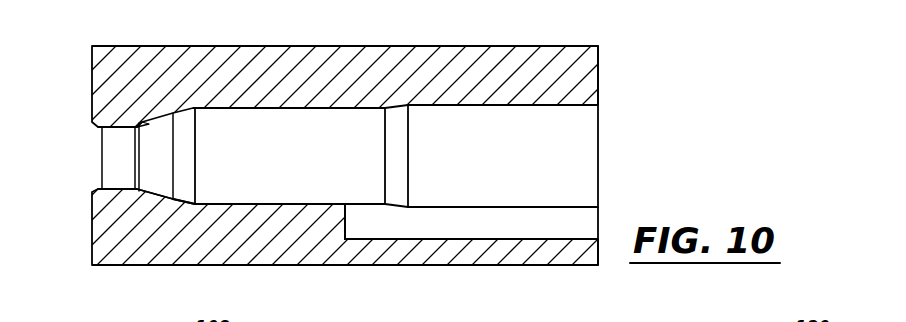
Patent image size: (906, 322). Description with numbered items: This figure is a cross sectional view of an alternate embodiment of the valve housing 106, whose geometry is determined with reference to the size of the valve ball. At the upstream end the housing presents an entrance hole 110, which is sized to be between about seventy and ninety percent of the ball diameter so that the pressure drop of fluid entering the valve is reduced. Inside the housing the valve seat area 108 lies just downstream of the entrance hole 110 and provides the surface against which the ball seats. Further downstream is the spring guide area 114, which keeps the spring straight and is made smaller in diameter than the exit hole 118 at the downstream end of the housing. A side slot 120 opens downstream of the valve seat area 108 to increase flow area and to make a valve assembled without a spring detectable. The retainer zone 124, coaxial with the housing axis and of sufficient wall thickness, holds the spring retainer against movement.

The valve housing 106 is at (572, 44).
The valve seat area 108 is at (138, 118).
The upstream entrance hole 110 is at (95, 160).
The spring guide area 114 is at (243, 196).
The exit hole 118 is at (598, 222).
The side slot 120 is at (485, 225).
The retainer zone 124 is at (508, 110).